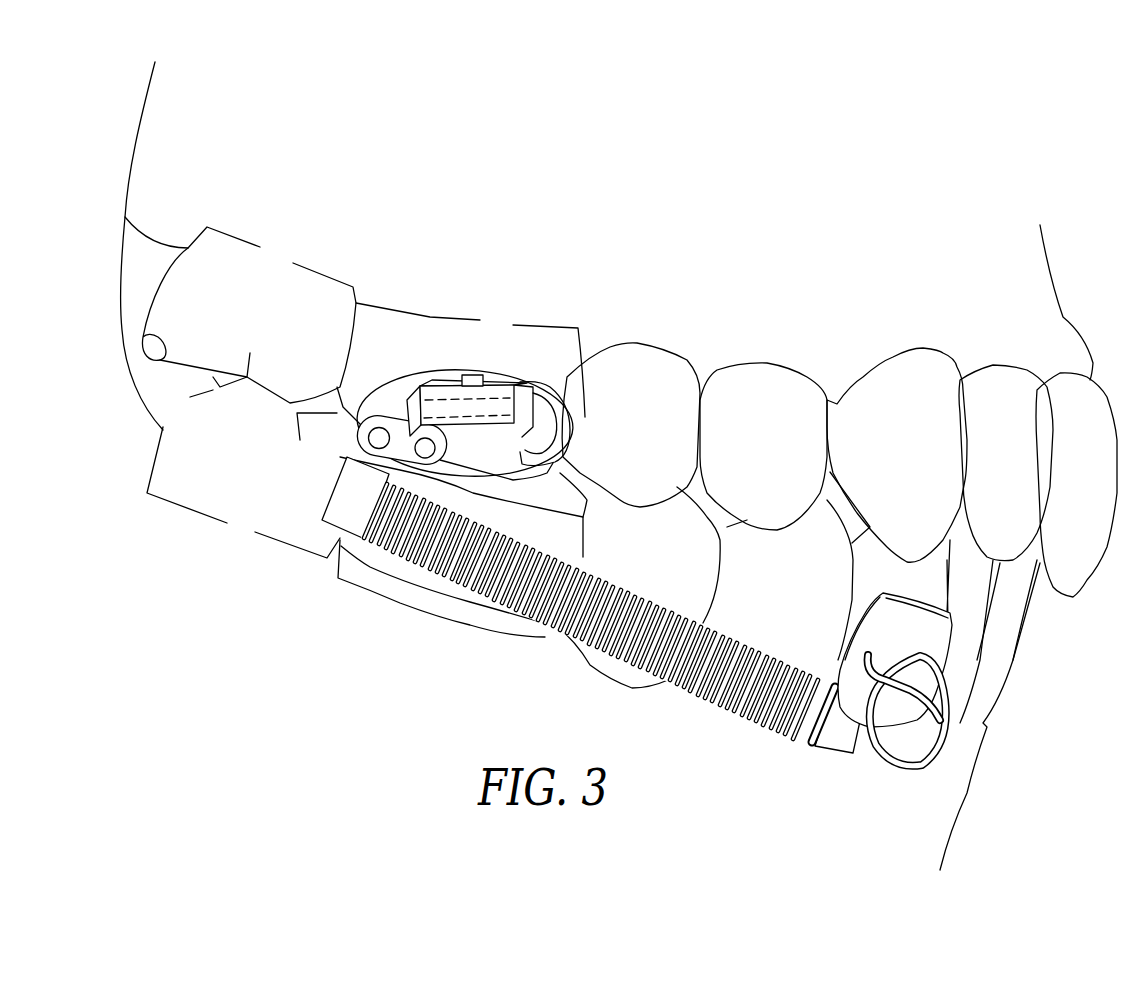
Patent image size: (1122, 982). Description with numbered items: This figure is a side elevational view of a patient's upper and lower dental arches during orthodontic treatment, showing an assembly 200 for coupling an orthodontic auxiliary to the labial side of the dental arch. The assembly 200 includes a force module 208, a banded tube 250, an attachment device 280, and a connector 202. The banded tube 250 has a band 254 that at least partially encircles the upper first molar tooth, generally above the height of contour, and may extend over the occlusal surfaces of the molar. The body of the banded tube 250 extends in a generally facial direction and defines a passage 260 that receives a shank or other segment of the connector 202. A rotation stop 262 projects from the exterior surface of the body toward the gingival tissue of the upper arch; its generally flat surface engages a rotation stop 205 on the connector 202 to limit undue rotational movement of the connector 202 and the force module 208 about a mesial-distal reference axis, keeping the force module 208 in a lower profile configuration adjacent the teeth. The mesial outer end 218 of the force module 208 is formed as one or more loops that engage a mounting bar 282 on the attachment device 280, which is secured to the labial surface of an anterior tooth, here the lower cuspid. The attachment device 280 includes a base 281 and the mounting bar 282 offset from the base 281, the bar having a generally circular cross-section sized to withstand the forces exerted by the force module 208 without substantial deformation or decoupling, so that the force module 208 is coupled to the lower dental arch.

The assembly 200 is at (390, 642).
The connector 202 is at (581, 417).
The rotation stop 205 is at (557, 430).
The force module 208 is at (557, 607).
The mesial outer end 218 is at (937, 695).
The banded tube 250 is at (441, 393).
The band 254 is at (393, 415).
The passage 260 is at (493, 410).
The rotation stop 262 is at (473, 380).
The attachment device 280 is at (940, 630).
The base 281 is at (763, 713).
The mounting bar 282 is at (893, 677).